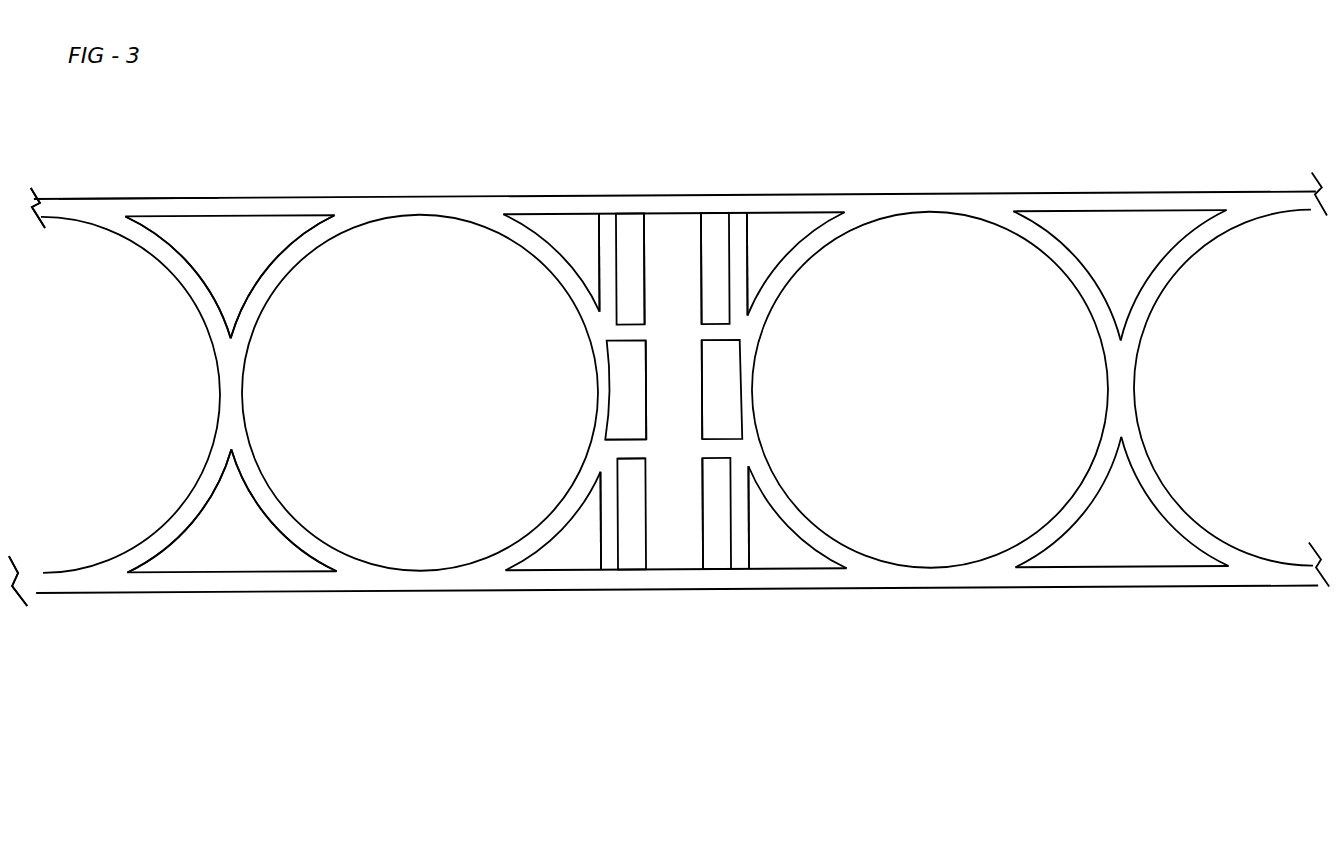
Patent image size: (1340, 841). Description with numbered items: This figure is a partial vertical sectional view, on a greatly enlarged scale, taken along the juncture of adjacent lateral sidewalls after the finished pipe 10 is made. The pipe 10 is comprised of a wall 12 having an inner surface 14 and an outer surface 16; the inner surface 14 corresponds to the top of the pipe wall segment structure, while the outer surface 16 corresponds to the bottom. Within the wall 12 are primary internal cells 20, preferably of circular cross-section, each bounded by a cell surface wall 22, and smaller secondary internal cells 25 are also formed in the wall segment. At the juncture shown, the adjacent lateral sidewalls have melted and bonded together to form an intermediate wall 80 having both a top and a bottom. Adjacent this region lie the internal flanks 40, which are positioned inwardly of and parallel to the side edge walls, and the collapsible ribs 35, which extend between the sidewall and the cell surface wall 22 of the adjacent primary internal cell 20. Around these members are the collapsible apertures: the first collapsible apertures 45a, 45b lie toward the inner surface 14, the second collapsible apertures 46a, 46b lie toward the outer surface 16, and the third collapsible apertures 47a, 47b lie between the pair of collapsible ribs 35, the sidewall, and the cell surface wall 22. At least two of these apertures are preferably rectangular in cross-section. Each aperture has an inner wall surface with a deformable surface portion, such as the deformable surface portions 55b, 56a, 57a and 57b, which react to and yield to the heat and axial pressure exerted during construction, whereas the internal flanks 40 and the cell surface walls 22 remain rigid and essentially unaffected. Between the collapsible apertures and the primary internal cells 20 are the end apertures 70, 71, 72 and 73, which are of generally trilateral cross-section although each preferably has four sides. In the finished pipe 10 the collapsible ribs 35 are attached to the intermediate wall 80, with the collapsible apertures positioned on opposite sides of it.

The pipe 10 is at (59, 354).
The wall 12 is at (139, 150).
The inner surface 14 is at (675, 172).
The outer surface 16 is at (677, 618).
The primary internal cell 20 is at (676, 435).
The cell surface wall 22 is at (677, 391).
The secondary internal cell 25 is at (230, 387).
The collapsible rib 35 is at (581, 453).
The internal flank 40 is at (664, 355).
The first collapsible aperture 45a is at (773, 226).
The first collapsible aperture 45b is at (650, 227).
The second collapsible aperture 46a is at (743, 554).
The second collapsible aperture 46b is at (608, 564).
The third collapsible aperture 47a is at (777, 389).
The third collapsible aperture 47b is at (577, 389).
The deformable surface portion 55b is at (699, 225).
The deformable surface portion 56a is at (667, 574).
The deformable surface portion 57a is at (770, 389).
The deformable surface portion 57b is at (576, 389).
The end aperture 70 is at (821, 231).
The end aperture 71 is at (807, 517).
The end aperture 72 is at (544, 219).
The end aperture 73 is at (553, 562).
The intermediate wall 80 is at (741, 233).